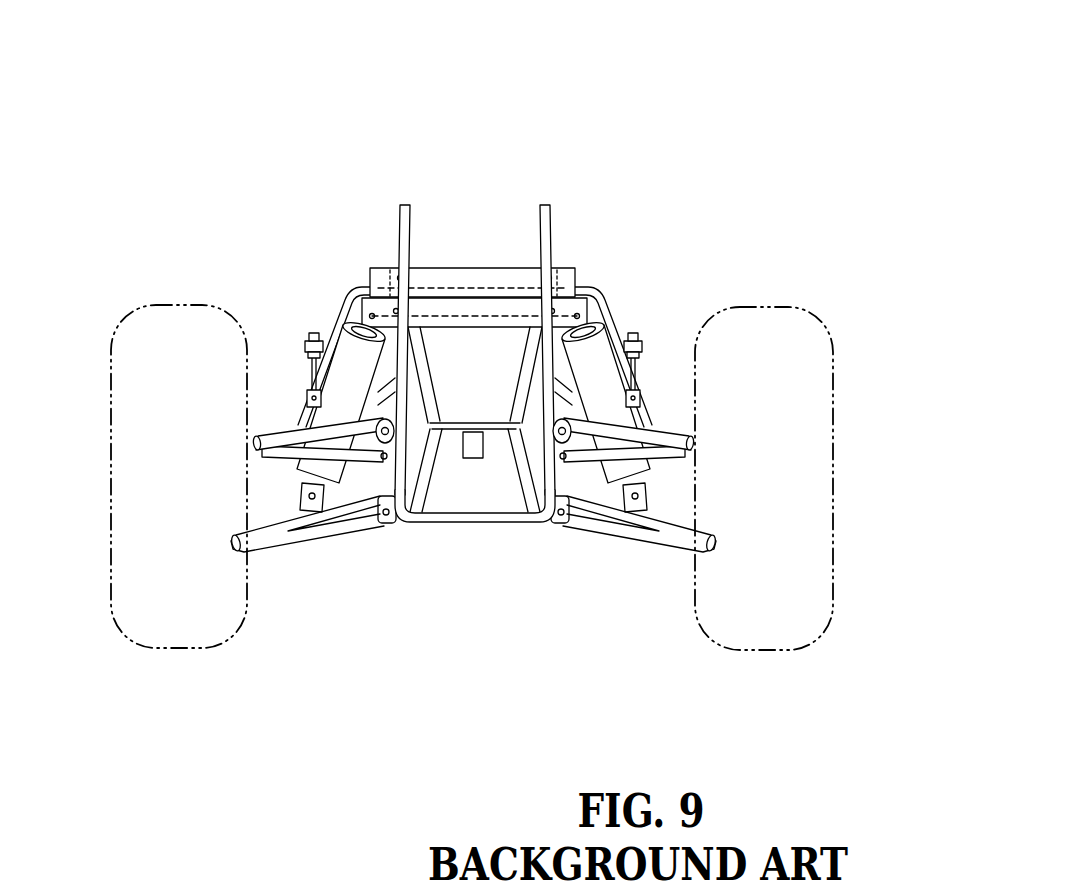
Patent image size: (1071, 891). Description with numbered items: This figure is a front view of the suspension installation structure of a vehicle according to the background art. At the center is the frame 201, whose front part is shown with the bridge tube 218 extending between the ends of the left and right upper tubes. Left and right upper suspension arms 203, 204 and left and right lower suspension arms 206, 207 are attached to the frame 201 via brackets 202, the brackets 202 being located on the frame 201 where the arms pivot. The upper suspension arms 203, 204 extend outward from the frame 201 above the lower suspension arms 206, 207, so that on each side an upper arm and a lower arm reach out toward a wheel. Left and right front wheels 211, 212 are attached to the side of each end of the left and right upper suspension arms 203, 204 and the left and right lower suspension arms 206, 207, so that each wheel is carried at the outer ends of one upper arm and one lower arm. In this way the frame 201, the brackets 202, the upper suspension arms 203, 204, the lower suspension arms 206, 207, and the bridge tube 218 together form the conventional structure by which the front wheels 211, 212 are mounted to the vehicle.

The frame 201 is at (551, 215).
The brackets 202 is at (390, 525).
The right upper suspension arm 203 is at (657, 410).
The left upper suspension arm 204 is at (290, 410).
The right lower suspension arm 206 is at (648, 555).
The left lower suspension arm 207 is at (280, 553).
The right front wheel 211 is at (832, 460).
The left front wheel 212 is at (111, 458).
The bridge tube 218 is at (468, 527).